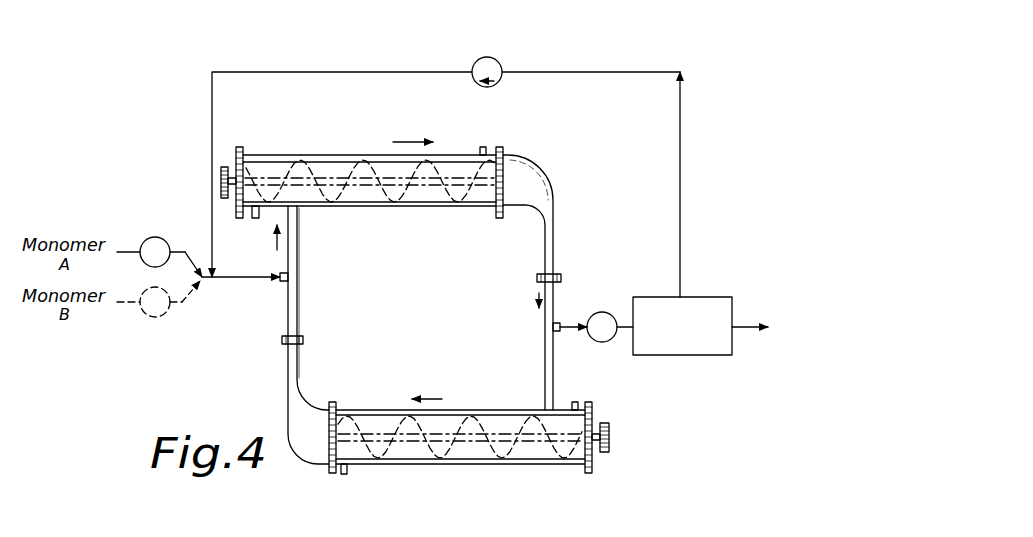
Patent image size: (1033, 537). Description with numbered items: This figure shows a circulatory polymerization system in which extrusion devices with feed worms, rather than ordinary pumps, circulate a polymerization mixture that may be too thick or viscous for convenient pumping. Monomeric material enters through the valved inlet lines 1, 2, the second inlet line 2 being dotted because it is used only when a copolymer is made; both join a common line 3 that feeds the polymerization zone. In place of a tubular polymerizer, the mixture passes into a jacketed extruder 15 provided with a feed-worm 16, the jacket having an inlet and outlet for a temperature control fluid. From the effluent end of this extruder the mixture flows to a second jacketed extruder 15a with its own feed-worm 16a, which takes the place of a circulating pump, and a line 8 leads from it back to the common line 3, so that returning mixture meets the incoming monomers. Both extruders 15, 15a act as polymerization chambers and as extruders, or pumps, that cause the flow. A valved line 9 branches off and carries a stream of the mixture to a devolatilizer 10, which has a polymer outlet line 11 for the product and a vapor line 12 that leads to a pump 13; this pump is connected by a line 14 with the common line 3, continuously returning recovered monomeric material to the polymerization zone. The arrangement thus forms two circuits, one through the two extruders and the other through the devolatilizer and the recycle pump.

The valved inlet line 1 is at (181, 247).
The valved inlet line 2 is at (174, 305).
The common line 3 is at (232, 279).
The line 8 is at (298, 322).
The valved line 9 is at (570, 325).
The devolatilizer 10 is at (716, 357).
The polymer outlet line 11 is at (750, 330).
The vapor line 12 is at (681, 215).
The pump 13 is at (497, 60).
The line 14 is at (300, 72).
The jacketed extruder 15 is at (263, 155).
The feed-worm 16 is at (330, 166).
The jacketed extruder 15a is at (360, 410).
The feed-worm 16a is at (478, 425).